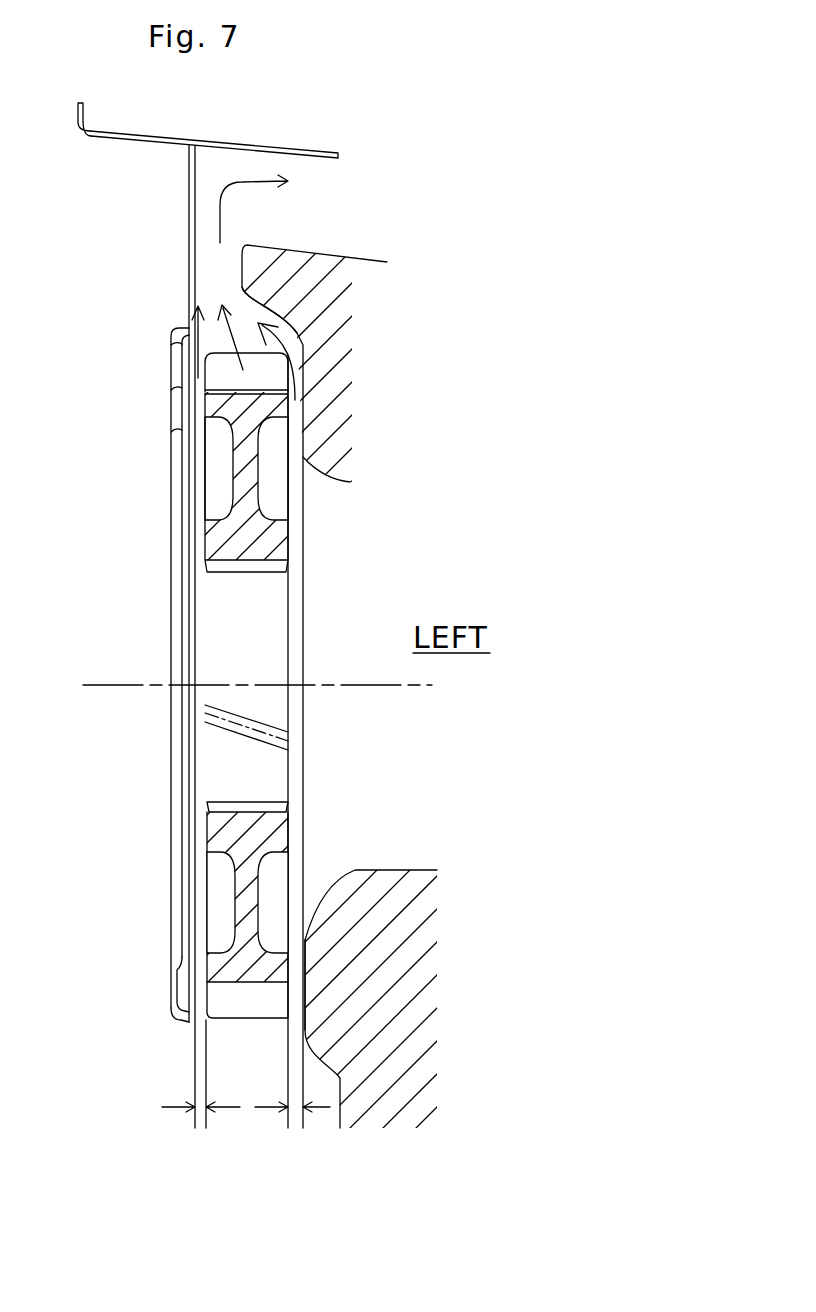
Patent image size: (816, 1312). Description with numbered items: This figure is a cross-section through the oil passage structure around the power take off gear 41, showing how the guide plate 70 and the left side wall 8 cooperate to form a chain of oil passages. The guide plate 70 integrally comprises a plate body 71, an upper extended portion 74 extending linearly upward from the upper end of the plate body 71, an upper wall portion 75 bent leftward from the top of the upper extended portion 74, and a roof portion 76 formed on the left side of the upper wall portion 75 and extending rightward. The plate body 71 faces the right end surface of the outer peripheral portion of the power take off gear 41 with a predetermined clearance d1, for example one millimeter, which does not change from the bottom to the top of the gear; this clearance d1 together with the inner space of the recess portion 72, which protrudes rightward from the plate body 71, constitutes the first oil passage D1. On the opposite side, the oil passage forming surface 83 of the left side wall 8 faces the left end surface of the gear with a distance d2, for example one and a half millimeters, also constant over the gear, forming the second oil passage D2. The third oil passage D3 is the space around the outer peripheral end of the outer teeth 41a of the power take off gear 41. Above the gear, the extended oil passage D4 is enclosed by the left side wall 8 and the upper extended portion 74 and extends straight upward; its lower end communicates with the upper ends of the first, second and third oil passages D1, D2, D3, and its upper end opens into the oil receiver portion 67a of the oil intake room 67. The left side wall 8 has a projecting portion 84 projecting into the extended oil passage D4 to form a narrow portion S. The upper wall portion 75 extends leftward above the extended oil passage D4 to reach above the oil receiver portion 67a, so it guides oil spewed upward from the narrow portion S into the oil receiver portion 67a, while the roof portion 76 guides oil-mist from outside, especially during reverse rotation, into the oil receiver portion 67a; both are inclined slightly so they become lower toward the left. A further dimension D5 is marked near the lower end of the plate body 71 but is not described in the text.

The upper wall portion 75 is at (250, 146).
The roof portion 76 is at (107, 138).
The upper extended portion 74 is at (187, 213).
The oil intake room 67 is at (357, 234).
The oil receiver portion 67a is at (278, 237).
The projecting portion 84 is at (268, 277).
The narrow portion S is at (220, 273).
The extended oil passage D4 is at (220, 258).
The third oil passage D3 is at (228, 352).
The first oil passage D1 is at (198, 405).
The second oil passage D2 is at (290, 397).
The distance D5 is at (222, 1025).
The power take off gear 41 is at (298, 553).
The outer teeth 41a is at (263, 723).
The guide plate 70 is at (160, 632).
The plate body 71 is at (192, 808).
The recess portion 72 is at (177, 990).
The left side wall 8 is at (392, 1070).
The oil passage forming surface 83 is at (305, 993).
The clearance d1 is at (201, 1093).
The distance d2 is at (292, 1134).